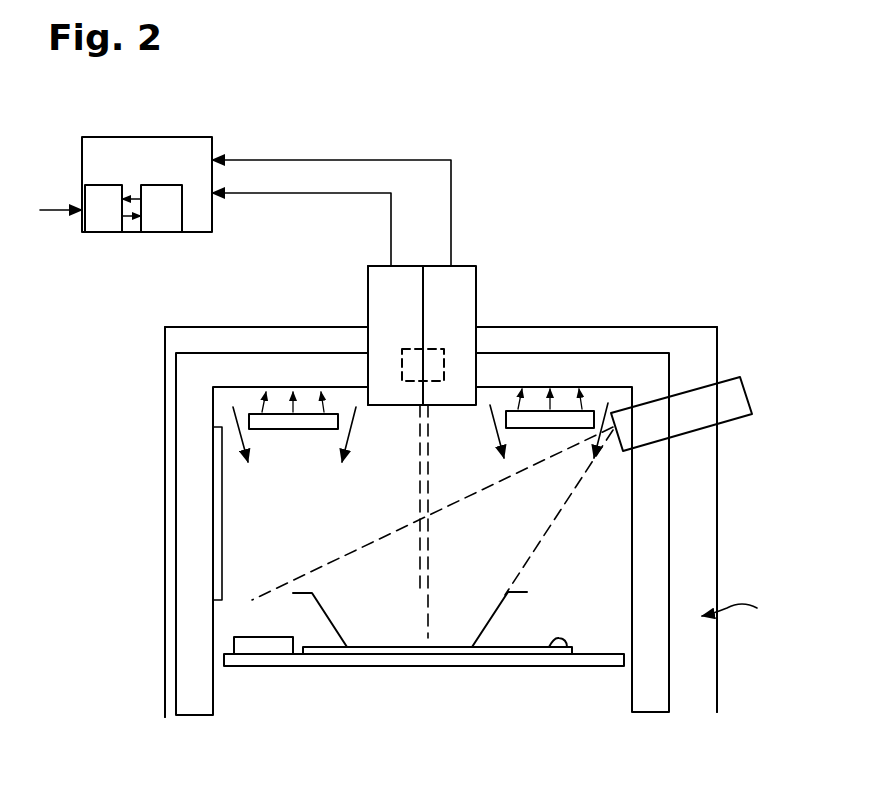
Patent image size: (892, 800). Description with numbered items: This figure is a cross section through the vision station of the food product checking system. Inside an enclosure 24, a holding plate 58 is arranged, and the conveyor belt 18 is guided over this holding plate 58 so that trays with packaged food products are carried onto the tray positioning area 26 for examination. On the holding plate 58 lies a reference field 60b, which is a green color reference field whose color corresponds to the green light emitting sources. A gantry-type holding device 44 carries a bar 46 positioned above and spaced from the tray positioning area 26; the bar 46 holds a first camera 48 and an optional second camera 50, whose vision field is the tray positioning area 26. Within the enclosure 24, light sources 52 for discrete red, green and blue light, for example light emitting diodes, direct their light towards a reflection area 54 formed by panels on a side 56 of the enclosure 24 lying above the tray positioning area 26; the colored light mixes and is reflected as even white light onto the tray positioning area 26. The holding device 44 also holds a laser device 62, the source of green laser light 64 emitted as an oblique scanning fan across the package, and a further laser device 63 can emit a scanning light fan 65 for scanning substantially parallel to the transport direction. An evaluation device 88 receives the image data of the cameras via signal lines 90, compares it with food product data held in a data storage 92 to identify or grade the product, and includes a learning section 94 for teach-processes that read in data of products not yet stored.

The conveyor belt 18 is at (406, 652).
The enclosure 24 is at (718, 338).
The tray positioning area 26 is at (565, 648).
The holding device 44 is at (748, 609).
The bar 46 is at (600, 380).
The first camera 48 is at (476, 295).
The second camera 50 is at (380, 293).
The light sources 52 is at (299, 424).
The reflection area 54 is at (237, 340).
The side of the enclosure 56 is at (671, 327).
The holding plate 58 is at (292, 658).
The green color reference field 60b is at (250, 648).
The laser device 62 is at (733, 413).
The further laser device 63 is at (436, 348).
The green laser light 64 is at (464, 502).
The scanning light fan 65 is at (420, 497).
The evaluation device 88 is at (173, 150).
The signal lines 90 is at (387, 160).
The data storage 92 is at (165, 230).
The learning section 94 is at (106, 232).